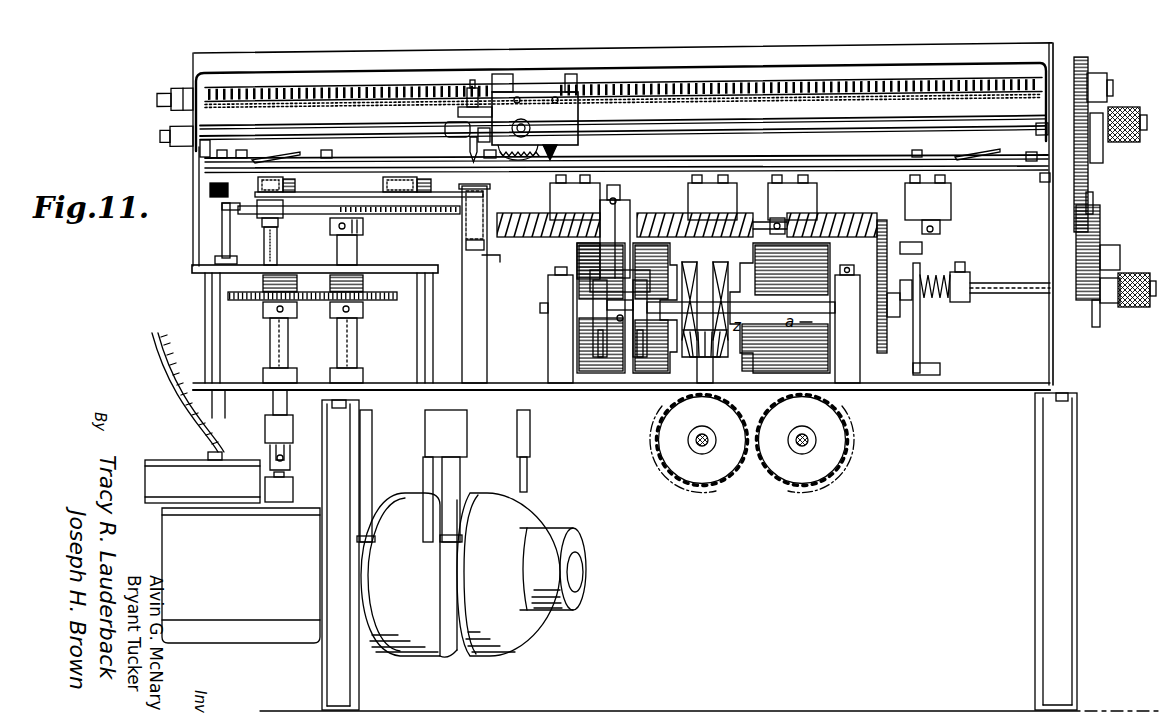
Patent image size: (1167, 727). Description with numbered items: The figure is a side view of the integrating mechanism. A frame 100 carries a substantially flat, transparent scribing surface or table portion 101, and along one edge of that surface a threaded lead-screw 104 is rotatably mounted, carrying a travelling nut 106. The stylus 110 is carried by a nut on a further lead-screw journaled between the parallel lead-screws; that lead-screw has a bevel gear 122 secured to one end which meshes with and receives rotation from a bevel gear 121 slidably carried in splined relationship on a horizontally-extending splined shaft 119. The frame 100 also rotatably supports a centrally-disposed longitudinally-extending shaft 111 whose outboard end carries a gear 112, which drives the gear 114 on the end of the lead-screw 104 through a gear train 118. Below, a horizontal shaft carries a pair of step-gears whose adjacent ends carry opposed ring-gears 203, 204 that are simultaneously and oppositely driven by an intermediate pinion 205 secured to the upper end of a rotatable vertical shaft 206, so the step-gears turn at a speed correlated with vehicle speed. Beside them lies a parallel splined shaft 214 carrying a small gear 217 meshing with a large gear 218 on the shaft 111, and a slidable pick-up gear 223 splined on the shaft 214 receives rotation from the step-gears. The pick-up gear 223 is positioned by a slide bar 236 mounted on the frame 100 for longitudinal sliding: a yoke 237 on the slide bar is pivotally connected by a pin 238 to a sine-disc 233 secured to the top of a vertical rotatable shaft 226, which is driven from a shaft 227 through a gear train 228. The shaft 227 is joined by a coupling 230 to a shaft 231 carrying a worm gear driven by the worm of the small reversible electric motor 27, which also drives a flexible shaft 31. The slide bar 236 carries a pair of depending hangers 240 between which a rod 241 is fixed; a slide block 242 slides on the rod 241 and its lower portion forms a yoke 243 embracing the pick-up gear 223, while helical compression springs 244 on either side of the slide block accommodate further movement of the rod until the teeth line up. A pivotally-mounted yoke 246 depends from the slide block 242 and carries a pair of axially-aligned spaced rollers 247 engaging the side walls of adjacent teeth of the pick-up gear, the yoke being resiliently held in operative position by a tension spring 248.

The lead-screw 104 is at (465, 86).
The travelling nut 106 is at (531, 92).
The splined shaft 119 is at (272, 132).
The yoke 237 is at (303, 192).
The stylus 110 is at (470, 150).
The bevel gear 122 is at (530, 142).
The bevel gear 121 is at (559, 151).
The slide bar 236 is at (838, 180).
The gear 114 is at (1093, 50).
The gear train 118 is at (1097, 215).
The scribing surface 101 is at (230, 185).
The frame 100 is at (186, 256).
The pin 238 is at (260, 224).
The sine-disc 233 is at (372, 234).
The hangers 240 is at (482, 247).
The helical compression springs 244 is at (497, 262).
The slide block 242 is at (612, 236).
The tension springs 248 is at (577, 262).
The pivotally-mounted yokes 246 is at (590, 283).
The rollers 247 is at (596, 302).
The splined shaft 214 is at (600, 322).
The yoke 243 is at (612, 338).
The rod 241 is at (918, 240).
The longitudinally-extending shaft 111 is at (1005, 297).
The small gear 217 is at (900, 323).
The large gear 218 is at (898, 345).
The gear 112 is at (1092, 320).
The gear train 228 is at (230, 308).
The shaft 227 is at (280, 338).
The vertical rotatable shafts 226 is at (347, 345).
The pick-up gear 223 is at (612, 350).
The ring-gear 204 is at (672, 348).
The pinion 205 is at (694, 365).
The vertical shaft 206 is at (667, 380).
The ring-gear 203 is at (750, 380).
The flexible shaft 31 is at (195, 422).
The coupling 230 is at (266, 430).
The shaft 231 is at (297, 478).
The small reversible electric motor 27 is at (473, 575).